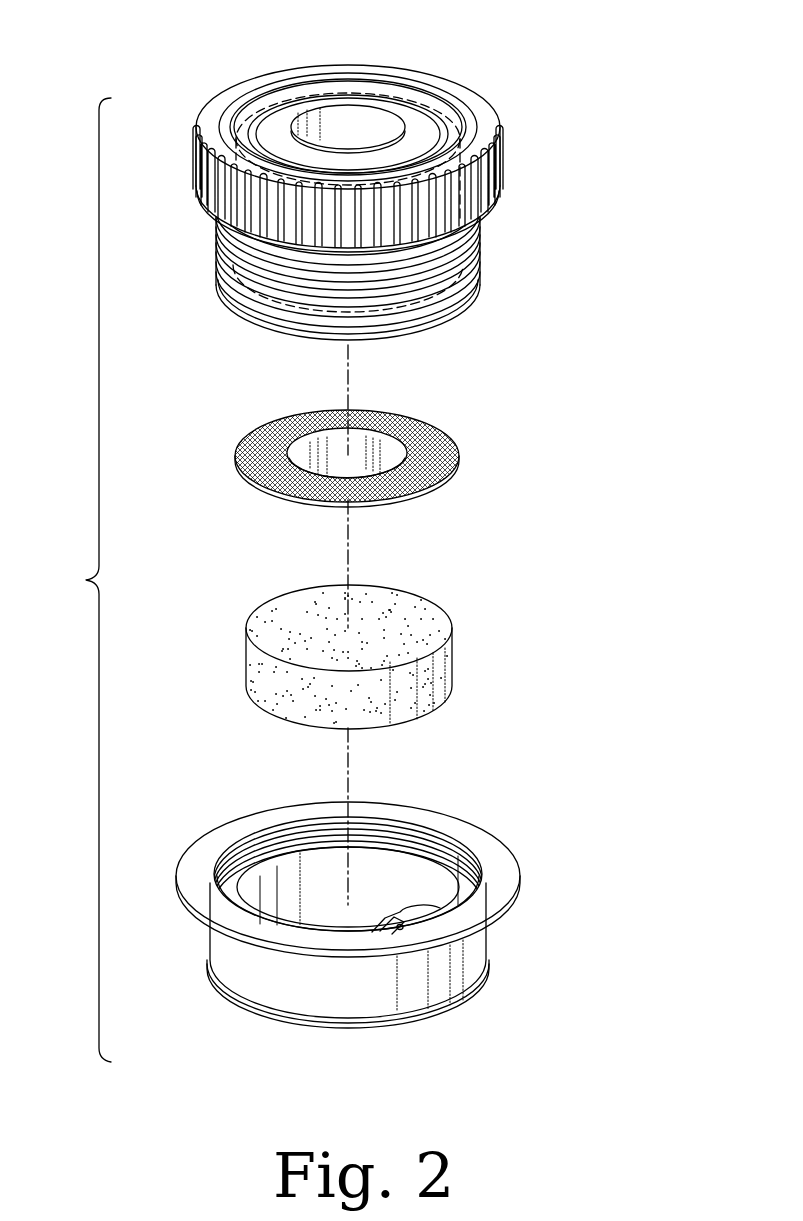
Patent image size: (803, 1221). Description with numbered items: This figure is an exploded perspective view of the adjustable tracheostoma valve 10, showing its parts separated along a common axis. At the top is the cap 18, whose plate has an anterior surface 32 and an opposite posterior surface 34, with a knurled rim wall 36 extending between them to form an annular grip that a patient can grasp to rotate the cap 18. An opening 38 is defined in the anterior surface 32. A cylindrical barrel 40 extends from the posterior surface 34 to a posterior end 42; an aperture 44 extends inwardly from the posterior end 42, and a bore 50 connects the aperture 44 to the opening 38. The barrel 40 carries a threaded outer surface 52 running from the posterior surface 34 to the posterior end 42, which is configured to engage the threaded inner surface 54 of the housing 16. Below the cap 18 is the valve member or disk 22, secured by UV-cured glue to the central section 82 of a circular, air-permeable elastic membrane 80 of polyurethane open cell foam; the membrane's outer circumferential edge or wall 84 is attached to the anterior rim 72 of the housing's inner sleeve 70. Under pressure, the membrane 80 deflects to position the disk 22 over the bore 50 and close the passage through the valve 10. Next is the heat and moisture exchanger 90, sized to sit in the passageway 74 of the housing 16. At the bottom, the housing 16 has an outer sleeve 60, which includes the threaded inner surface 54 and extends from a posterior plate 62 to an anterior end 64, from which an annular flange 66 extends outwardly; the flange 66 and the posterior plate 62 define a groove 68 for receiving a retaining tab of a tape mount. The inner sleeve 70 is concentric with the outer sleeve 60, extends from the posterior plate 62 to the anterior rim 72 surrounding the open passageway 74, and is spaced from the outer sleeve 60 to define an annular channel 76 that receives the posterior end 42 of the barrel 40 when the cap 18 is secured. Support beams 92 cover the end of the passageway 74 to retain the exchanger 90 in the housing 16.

The tracheostoma valve 10 is at (72, 580).
The housing 16 is at (549, 848).
The cap 18 is at (570, 116).
The valve member or disk 22 is at (351, 443).
The anterior surface 32 is at (484, 117).
The posterior surface 34 is at (498, 214).
The rim wall 36 is at (503, 168).
The opening 38 is at (392, 96).
The barrel 40 is at (480, 285).
The posterior end 42 is at (440, 326).
The aperture 44 is at (333, 312).
The bore 50 is at (303, 103).
The threaded outer surface 52 is at (218, 246).
The threaded inner surface 54 is at (470, 855).
The outer sleeve 60 is at (470, 966).
The posterior plate 62 is at (425, 1022).
The anterior end 64 is at (195, 858).
The annular flange 66 is at (520, 878).
The groove 68 is at (204, 944).
The inner sleeve 70 is at (424, 880).
The anterior rim 72 is at (400, 840).
The passageway 74 is at (270, 891).
The annular channel 76 is at (274, 844).
The elastic membrane 80 is at (455, 455).
The central section 82 is at (282, 457).
The outer circumferential edge or wall 84 is at (424, 488).
The heat and moisture exchanger 90 is at (445, 626).
The support beams 92 is at (450, 925).